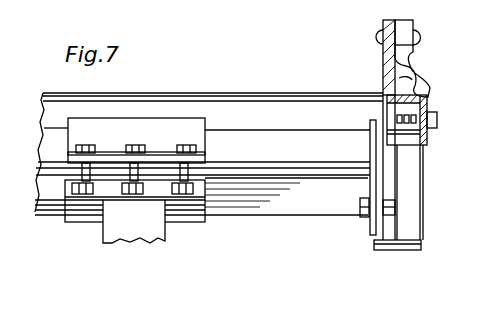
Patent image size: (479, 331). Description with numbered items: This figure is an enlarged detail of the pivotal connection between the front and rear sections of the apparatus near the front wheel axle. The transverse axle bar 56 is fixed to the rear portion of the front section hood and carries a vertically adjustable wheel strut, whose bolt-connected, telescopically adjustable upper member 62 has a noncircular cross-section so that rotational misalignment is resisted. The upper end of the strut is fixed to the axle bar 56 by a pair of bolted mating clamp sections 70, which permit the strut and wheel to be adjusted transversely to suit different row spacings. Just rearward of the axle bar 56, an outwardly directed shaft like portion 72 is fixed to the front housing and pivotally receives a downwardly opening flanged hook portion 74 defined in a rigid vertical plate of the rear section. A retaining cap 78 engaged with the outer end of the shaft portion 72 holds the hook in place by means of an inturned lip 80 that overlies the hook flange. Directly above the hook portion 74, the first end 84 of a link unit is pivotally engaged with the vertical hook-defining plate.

The transverse axle bar 56 is at (250, 198).
The upper member 62 is at (113, 228).
The clamp sections 70 is at (190, 133).
The shaft like portions 72 is at (402, 137).
The hook portion 74 is at (393, 97).
The retaining cap 78 is at (430, 108).
The inturned lip 80 is at (420, 93).
The first end 84 is at (415, 62).